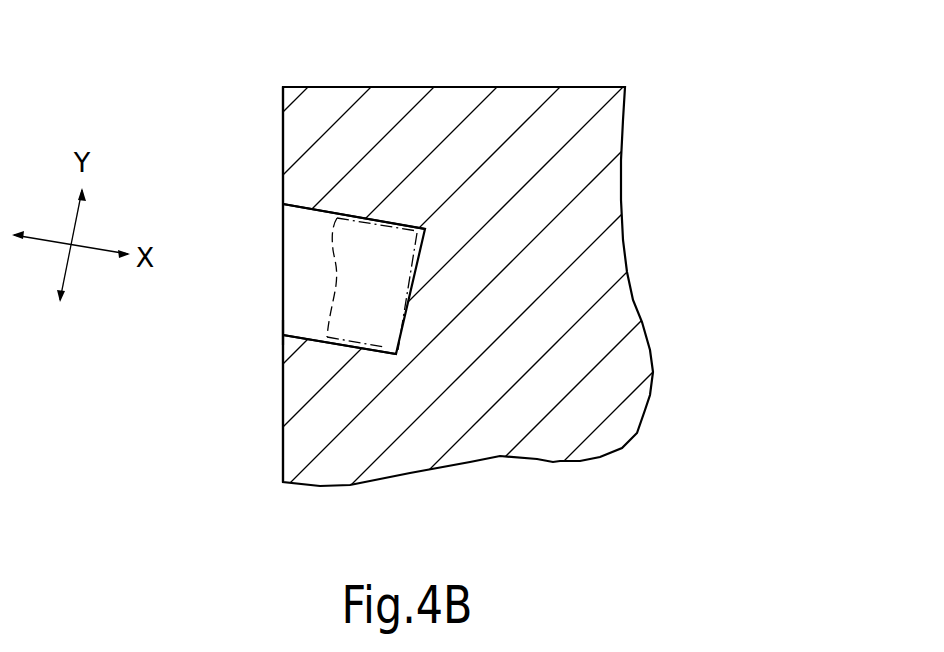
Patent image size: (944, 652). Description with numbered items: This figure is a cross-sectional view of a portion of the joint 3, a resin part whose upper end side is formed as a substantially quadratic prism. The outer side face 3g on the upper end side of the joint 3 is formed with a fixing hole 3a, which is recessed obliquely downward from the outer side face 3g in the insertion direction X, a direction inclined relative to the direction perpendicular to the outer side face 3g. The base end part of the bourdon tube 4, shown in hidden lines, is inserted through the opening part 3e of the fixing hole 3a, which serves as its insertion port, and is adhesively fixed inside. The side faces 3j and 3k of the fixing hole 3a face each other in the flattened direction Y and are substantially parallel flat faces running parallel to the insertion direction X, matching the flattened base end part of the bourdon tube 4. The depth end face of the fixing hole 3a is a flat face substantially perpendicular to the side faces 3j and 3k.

The joint 3 is at (580, 86).
The fixing hole 3a is at (300, 281).
The opening part 3e is at (283, 335).
The outer side face 3g is at (283, 432).
The side face 3j is at (358, 219).
The side face 3k is at (372, 347).
The bourdon tube 4 is at (343, 340).